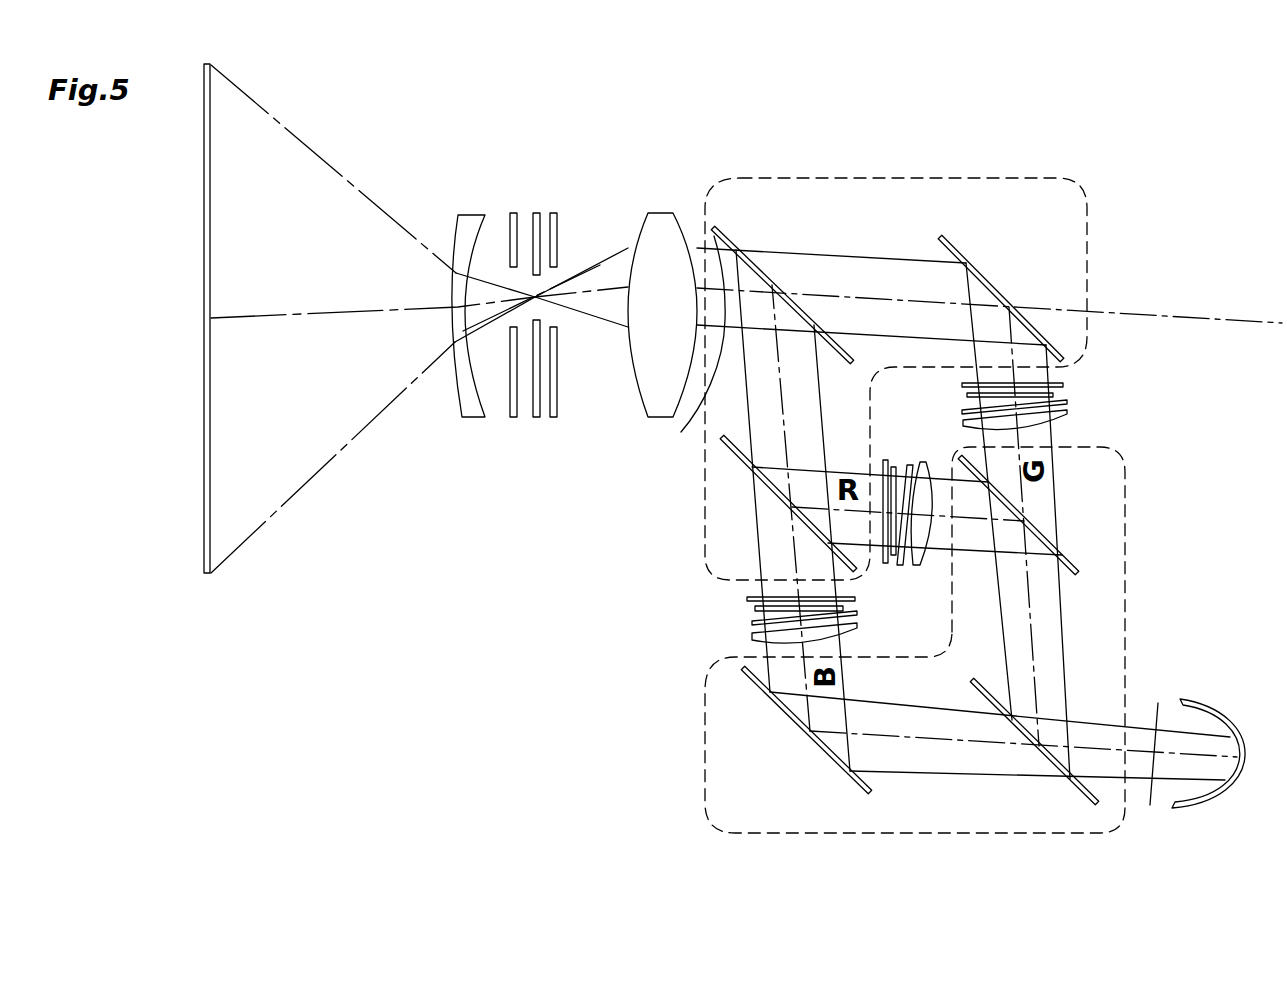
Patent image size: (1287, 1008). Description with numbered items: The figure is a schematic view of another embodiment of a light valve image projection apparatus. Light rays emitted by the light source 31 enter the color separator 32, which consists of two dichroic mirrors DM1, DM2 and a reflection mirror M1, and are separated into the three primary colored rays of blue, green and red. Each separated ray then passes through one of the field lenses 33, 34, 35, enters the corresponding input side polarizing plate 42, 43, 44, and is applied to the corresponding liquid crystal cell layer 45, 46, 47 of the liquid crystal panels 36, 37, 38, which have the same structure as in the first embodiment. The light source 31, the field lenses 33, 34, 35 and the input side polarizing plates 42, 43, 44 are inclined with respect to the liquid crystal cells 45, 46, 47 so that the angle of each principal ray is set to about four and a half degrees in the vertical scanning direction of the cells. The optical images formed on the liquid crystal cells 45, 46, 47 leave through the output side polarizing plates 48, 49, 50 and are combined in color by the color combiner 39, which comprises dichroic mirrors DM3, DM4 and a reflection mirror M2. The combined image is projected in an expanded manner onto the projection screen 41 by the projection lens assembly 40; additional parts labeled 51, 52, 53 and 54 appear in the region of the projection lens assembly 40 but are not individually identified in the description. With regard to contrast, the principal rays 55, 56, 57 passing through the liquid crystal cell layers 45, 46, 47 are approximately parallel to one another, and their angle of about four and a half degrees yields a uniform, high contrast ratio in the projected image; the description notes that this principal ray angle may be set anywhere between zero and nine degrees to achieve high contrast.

The light source 31 is at (1135, 822).
The color separator 32 is at (705, 820).
The field lens 33 is at (1067, 418).
The field lens 34 is at (925, 560).
The field lens 35 is at (750, 640).
The liquid crystal panel 36 is at (1021, 359).
The liquid crystal panel 37 is at (995, 501).
The liquid crystal panel 38 is at (784, 643).
The color combiner 39 is at (1000, 178).
The projection lens assembly 40 is at (554, 315).
The projection screen 41 is at (212, 577).
The input side polarizing plate 42 is at (962, 412).
The input side polarizing plate 43 is at (985, 503).
The input side polarizing plate 44 is at (752, 637).
The liquid crystal cell layer 45 is at (967, 395).
The liquid crystal cell layer 46 is at (909, 465).
The liquid crystal cell layer 47 is at (857, 610).
The output side polarizing plate 48 is at (962, 385).
The output side polarizing plate 49 is at (885, 460).
The output side polarizing plate 50 is at (747, 598).
The convex lens 51 is at (647, 372).
The meniscus lens 52 is at (463, 405).
The aperture plate 53 is at (555, 418).
The aperture plate 54 is at (537, 418).
The principal ray 55 is at (513, 418).
The principal ray 56 is at (722, 245).
The principal ray 57 is at (690, 352).
The dichroic mirror DM1 is at (1065, 772).
The dichroic mirror DM2 is at (1077, 566).
The dichroic mirror DM3 is at (740, 453).
The dichroic mirror DM4 is at (770, 273).
The reflection mirror M1 is at (818, 745).
The reflection mirror M2 is at (998, 292).